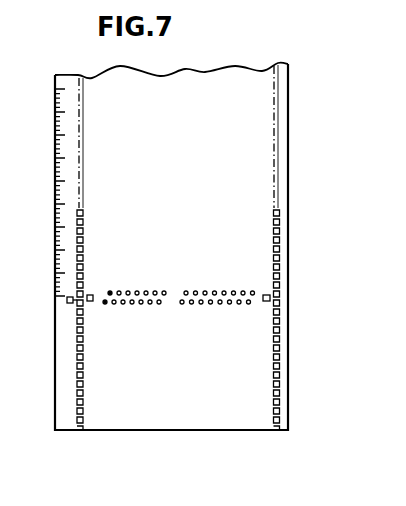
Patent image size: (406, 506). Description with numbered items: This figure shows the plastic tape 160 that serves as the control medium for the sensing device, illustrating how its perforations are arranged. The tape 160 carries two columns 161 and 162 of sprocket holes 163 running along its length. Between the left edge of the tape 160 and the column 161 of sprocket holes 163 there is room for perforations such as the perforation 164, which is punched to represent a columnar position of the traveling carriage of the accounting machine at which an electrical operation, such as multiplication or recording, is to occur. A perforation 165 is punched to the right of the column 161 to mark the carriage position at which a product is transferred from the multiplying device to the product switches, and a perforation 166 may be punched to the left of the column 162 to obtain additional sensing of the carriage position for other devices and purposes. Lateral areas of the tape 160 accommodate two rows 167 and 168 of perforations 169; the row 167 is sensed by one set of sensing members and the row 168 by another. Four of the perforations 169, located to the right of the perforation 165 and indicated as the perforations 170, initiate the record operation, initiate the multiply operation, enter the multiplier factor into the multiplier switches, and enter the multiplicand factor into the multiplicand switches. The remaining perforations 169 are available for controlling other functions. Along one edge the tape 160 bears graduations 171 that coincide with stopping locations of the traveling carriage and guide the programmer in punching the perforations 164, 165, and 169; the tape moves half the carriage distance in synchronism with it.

The plastic tape 160 is at (167, 424).
The column of sprocket holes 161 is at (82, 134).
The column of sprocket holes 162 is at (270, 133).
The sprocket holes 163 is at (82, 210).
The perforation 164 is at (67, 300).
The perforation 165 is at (90, 295).
The perforation 166 is at (270, 298).
The row of perforations 167 is at (225, 291).
The row of perforations 168 is at (225, 304).
The perforations 169 is at (253, 291).
The four perforations 170 is at (118, 295).
The scale markings 171 is at (53, 207).